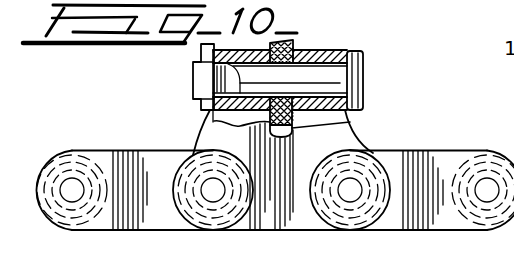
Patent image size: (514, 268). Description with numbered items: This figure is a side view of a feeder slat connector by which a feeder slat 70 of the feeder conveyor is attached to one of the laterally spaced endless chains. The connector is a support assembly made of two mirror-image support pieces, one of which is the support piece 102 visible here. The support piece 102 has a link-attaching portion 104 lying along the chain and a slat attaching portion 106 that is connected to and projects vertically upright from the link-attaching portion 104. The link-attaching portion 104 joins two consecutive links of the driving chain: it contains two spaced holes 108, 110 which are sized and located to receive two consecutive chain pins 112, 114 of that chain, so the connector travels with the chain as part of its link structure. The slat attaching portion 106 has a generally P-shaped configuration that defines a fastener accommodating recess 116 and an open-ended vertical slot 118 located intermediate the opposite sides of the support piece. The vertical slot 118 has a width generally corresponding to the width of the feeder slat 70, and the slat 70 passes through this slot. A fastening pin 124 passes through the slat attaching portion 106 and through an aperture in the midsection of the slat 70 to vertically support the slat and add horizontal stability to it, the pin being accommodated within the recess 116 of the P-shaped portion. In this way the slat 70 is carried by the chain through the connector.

The feeder slat 70 is at (357, 142).
The support piece 102 is at (350, 123).
The link-attaching portion 104 is at (263, 212).
The slat attaching portion 106 is at (339, 56).
The hole 108 is at (206, 198).
The hole 110 is at (352, 202).
The chain pin 112 is at (207, 197).
The chain pin 114 is at (353, 189).
The fastener accommodating recess 116 is at (205, 74).
The vertical slot 118 is at (282, 43).
The fastening pin 124 is at (356, 63).